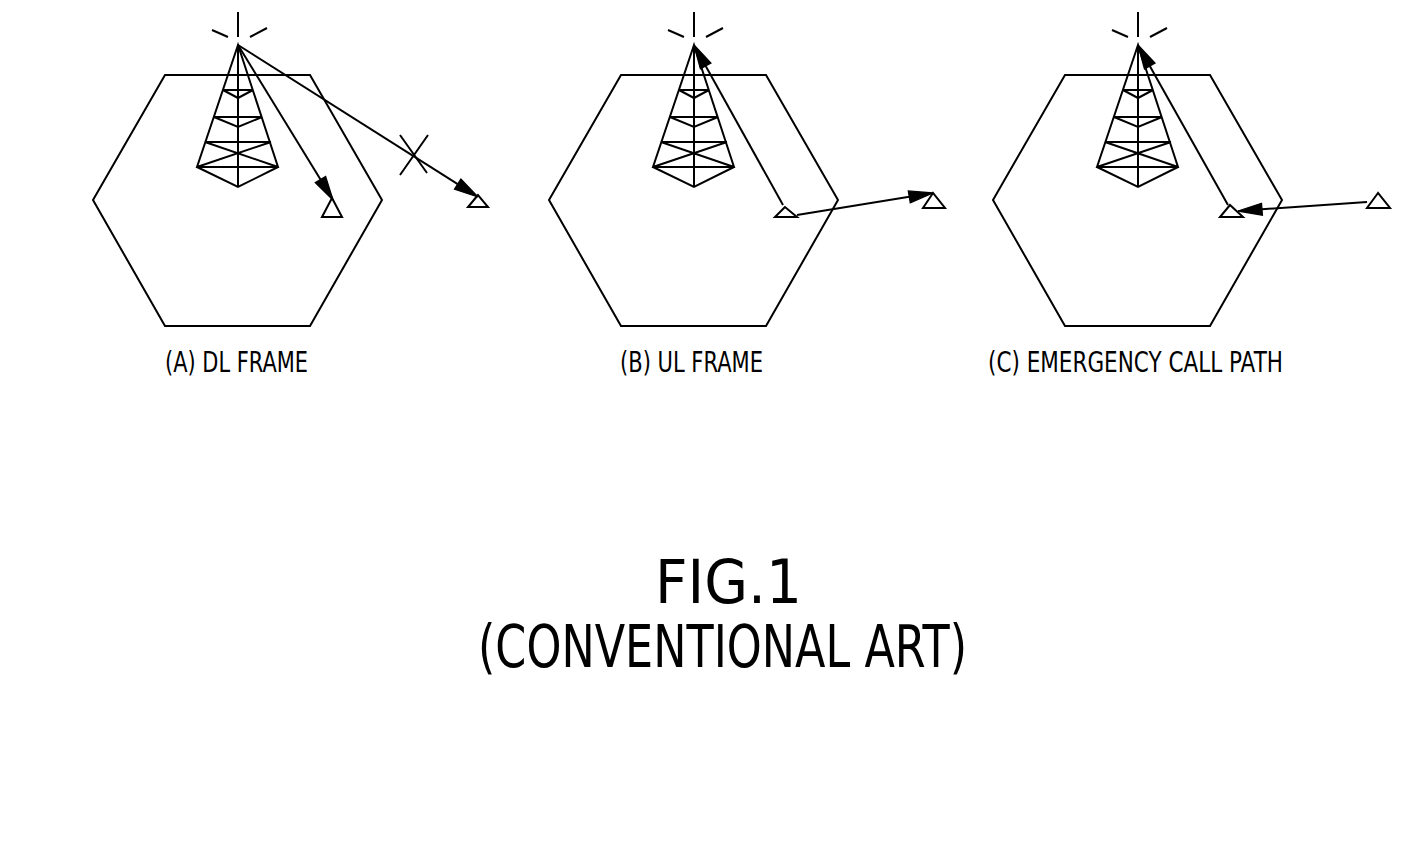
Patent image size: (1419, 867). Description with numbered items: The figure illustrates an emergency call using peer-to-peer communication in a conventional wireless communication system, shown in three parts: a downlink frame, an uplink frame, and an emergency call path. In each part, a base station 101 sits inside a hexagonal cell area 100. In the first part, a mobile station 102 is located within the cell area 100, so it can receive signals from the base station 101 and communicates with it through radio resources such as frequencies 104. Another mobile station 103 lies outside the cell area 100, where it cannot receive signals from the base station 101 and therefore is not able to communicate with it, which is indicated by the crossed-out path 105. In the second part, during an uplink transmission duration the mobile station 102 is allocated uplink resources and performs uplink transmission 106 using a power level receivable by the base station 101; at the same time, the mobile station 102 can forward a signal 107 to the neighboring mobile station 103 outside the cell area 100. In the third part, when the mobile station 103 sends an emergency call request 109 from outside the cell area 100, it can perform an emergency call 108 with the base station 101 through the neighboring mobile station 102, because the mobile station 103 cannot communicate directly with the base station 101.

In FIG. 1A, the cell area 100 is at (130, 260).
In FIG. 1A, the base station 101 is at (214, 117).
In FIG. 1A, the mobile station 102 is at (322, 210).
In FIG. 1A, the mobile station 103 is at (469, 201).
In FIG. 1A, the radio resources 104 is at (308, 163).
In FIG. 1A, the disabled communication with the base station 105 is at (350, 113).
In FIG. 1B, the uplink transmission 106 is at (767, 164).
In FIG. 1B, the signal forwarded to neighboring mobile station 107 is at (866, 208).
In FIG. 1C, the emergency call with the base station 108 is at (1185, 127).
In FIG. 1C, the emergency call request 109 is at (1308, 204).